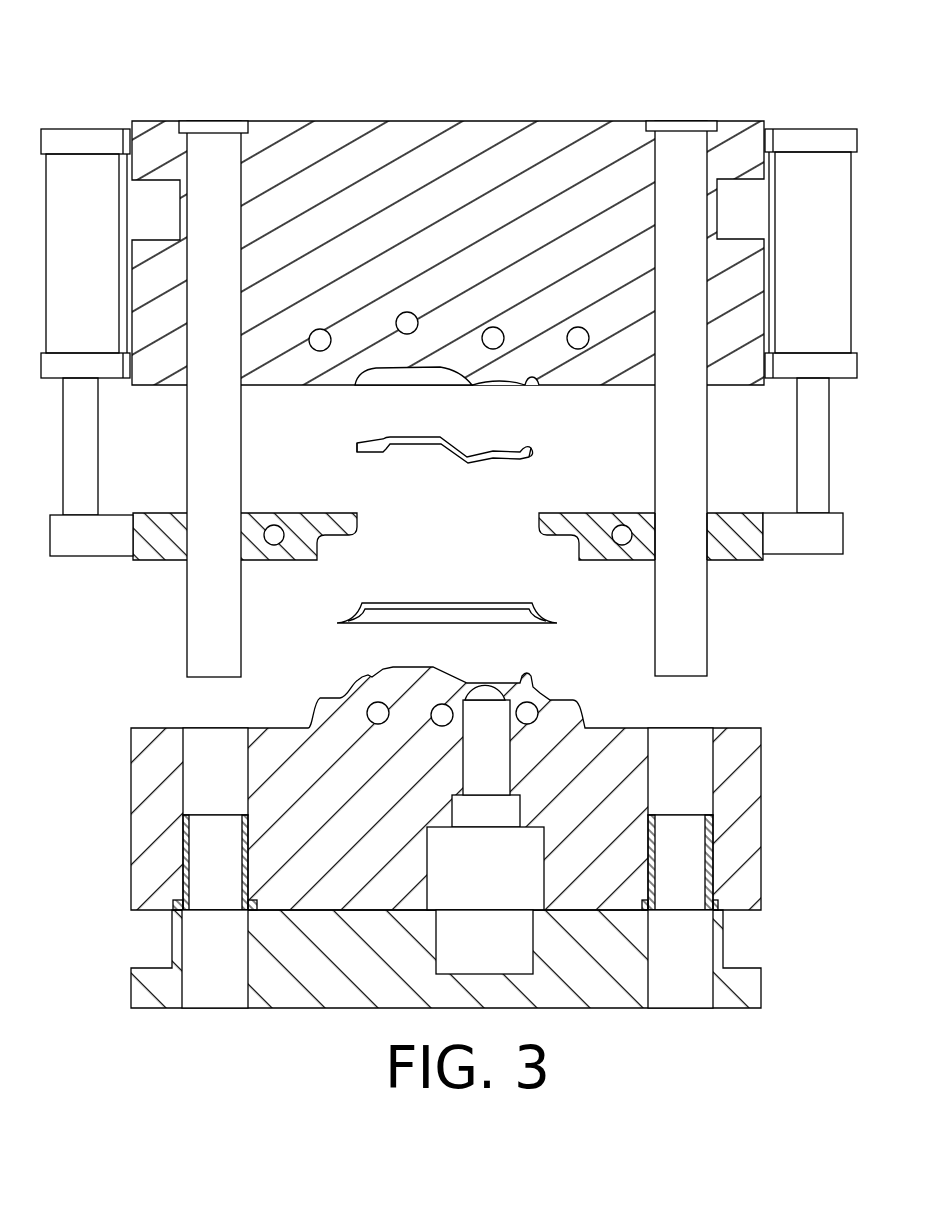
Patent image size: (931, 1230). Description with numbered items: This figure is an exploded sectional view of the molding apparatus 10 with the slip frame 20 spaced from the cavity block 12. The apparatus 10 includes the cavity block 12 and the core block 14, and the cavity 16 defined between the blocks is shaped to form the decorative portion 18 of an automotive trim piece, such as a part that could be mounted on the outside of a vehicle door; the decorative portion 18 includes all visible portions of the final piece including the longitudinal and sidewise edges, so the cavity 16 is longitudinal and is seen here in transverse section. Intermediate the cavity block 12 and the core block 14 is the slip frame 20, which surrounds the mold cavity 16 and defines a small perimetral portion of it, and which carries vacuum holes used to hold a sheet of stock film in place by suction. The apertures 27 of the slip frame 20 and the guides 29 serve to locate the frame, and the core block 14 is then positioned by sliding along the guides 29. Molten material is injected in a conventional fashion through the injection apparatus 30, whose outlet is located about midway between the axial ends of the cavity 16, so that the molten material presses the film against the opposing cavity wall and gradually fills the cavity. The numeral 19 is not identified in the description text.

The molding apparatus 10 is at (234, 84).
The cavity block 12 is at (584, 150).
The core block 14 is at (747, 807).
The cavity 16 is at (428, 372).
The decorative portion 18 is at (357, 443).
The strip end portions 19 is at (357, 455).
The slip frame 20 is at (733, 547).
The apertures 27 is at (678, 532).
The guides 29 is at (708, 655).
The injection apparatus 30 is at (487, 707).